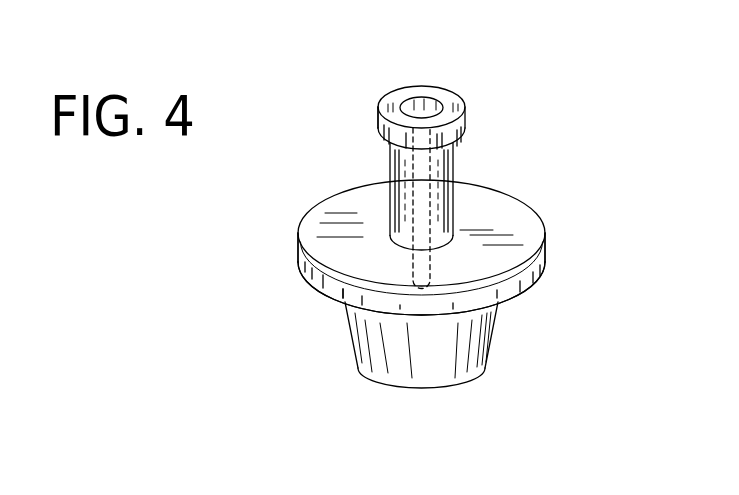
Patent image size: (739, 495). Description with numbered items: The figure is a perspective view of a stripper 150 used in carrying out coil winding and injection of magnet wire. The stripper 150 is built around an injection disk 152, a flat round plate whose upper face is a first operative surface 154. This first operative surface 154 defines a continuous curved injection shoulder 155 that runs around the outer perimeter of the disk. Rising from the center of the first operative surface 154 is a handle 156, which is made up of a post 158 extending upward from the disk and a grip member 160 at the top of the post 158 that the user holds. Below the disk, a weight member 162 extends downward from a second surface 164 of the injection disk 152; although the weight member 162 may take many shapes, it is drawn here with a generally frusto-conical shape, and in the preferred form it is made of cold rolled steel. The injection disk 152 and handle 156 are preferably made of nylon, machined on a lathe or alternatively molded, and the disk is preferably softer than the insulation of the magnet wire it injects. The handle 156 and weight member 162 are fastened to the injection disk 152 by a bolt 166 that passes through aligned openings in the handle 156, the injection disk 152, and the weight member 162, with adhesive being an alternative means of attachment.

The stripper 150 is at (500, 218).
The injection disk 152 is at (323, 297).
The first operative surface 154 is at (337, 205).
The continuous curved injection shoulder 155 is at (545, 235).
The handle 156 is at (447, 87).
The post 158 is at (390, 163).
The grip member 160 is at (380, 118).
The weight member 162 is at (440, 343).
The second surface 164 is at (337, 300).
The bolt 166 is at (418, 97).